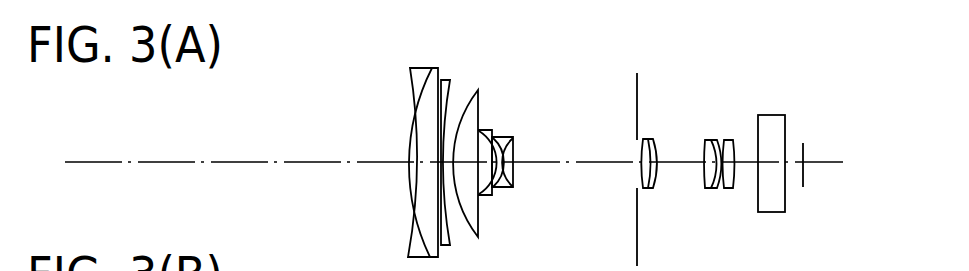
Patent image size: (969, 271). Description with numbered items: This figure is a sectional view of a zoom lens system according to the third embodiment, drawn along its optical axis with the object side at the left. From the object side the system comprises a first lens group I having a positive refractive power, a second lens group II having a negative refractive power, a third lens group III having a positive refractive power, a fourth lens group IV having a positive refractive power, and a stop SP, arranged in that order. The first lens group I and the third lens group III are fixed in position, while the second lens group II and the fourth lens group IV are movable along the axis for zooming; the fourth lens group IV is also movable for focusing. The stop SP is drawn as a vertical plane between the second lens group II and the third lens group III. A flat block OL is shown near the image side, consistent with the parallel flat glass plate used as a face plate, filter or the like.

The first lens group I is at (405, 18).
The second lens group II is at (480, 27).
The third lens group III is at (673, 19).
The fourth lens group IV is at (738, 19).
The stop SP is at (636, 234).
The optical low-pass filter / glass block OL is at (786, 114).